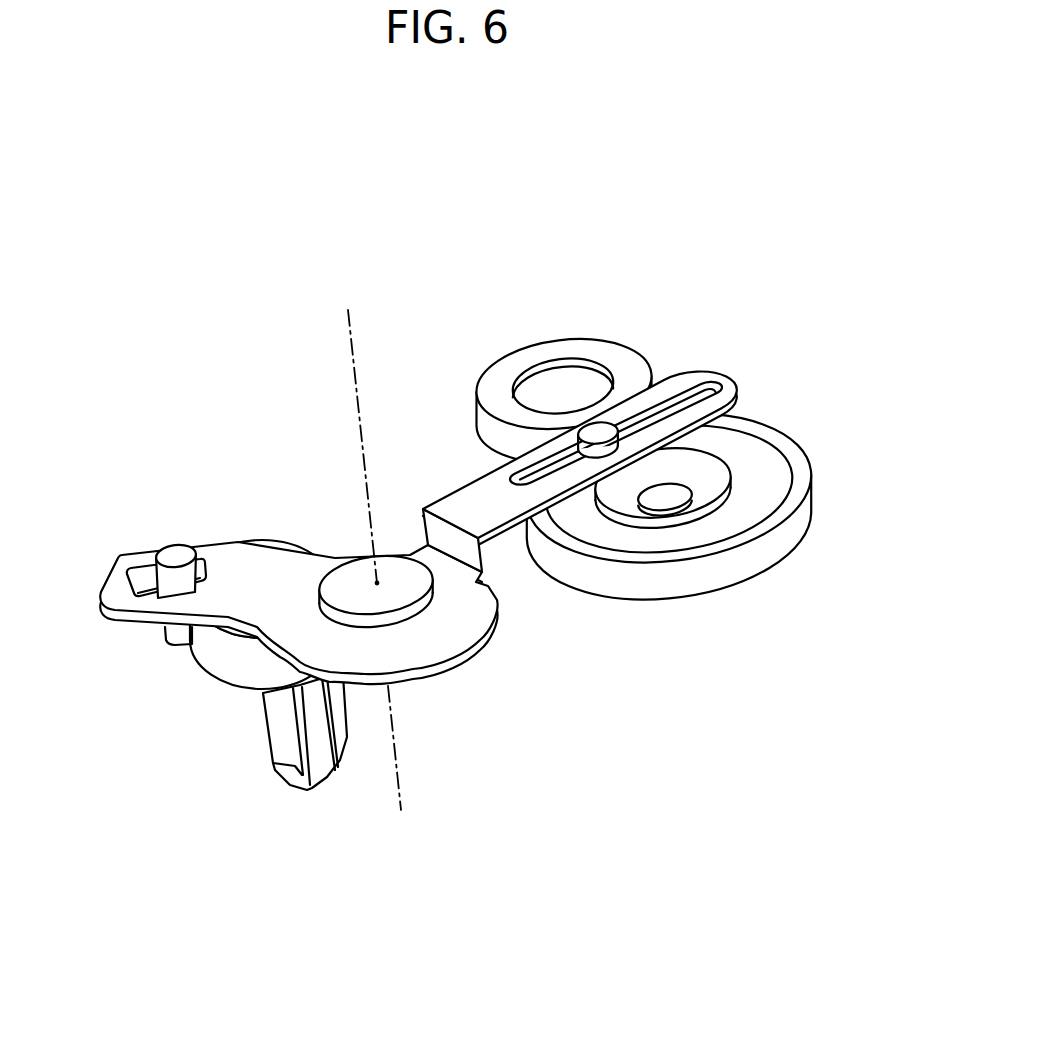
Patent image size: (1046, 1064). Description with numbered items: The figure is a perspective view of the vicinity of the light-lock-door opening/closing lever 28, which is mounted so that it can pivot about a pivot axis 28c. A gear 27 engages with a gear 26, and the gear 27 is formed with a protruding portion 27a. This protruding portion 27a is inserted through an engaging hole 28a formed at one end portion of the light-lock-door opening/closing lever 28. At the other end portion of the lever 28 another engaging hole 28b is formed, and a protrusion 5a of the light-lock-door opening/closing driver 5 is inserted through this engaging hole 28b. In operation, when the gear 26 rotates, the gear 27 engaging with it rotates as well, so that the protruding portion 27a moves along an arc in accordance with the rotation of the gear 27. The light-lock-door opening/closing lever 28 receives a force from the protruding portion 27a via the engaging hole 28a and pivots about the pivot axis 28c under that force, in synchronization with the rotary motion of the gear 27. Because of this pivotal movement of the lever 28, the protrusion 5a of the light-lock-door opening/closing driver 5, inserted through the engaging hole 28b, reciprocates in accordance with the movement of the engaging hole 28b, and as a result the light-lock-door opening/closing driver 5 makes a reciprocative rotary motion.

The light-lock-door opening/closing driver 5 is at (240, 653).
The protrusion of light-lock-door opening/closing driver 5a is at (176, 587).
The gear 26 is at (587, 347).
The gear 27 is at (790, 453).
The protruding portion 27a is at (592, 433).
The light-lock-door opening/closing lever 28 is at (454, 627).
The engaging hole 28a is at (690, 372).
The engaging hole 28b is at (142, 577).
The pivot axis 28c is at (350, 333).